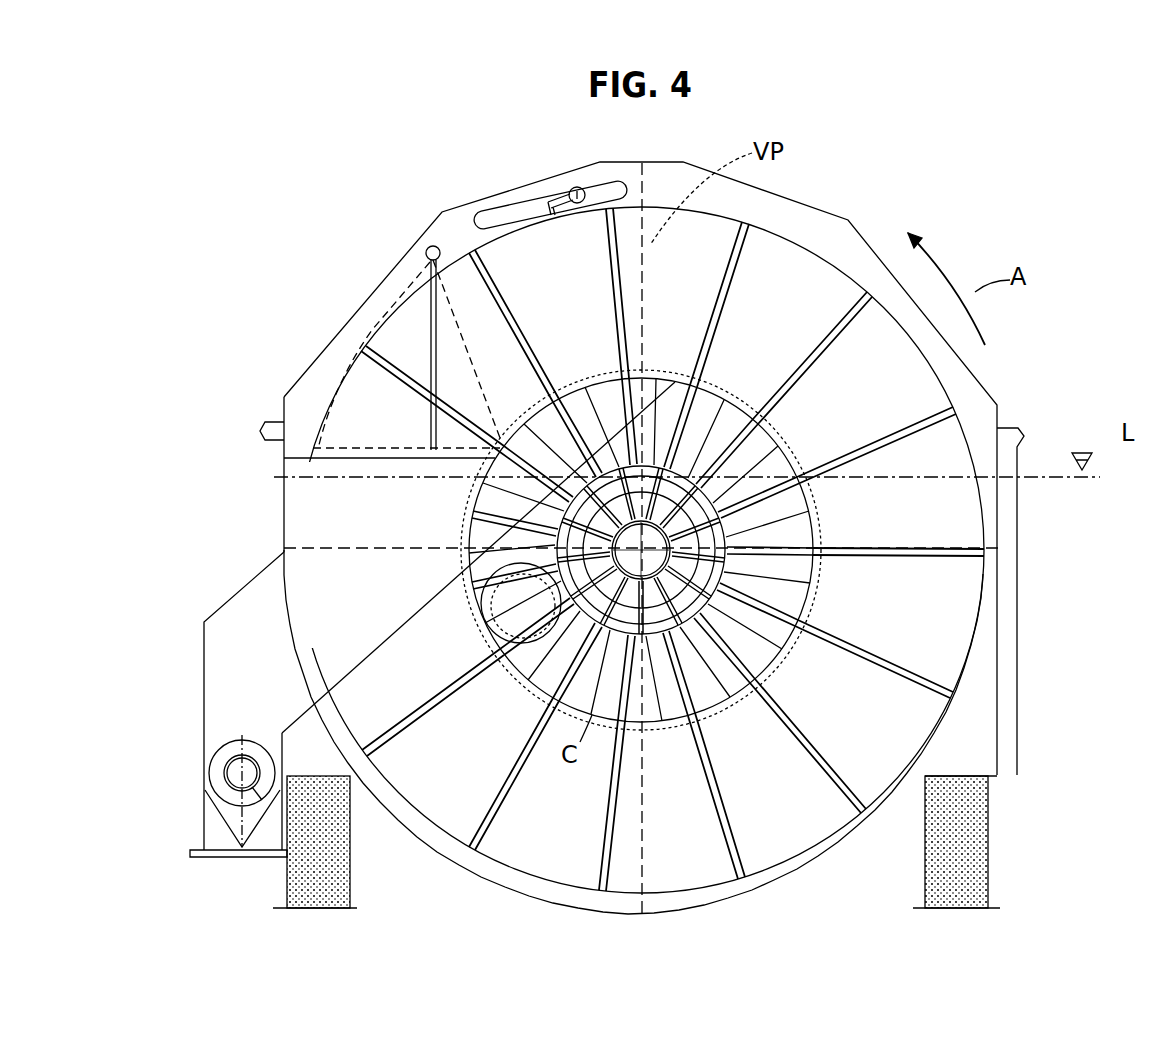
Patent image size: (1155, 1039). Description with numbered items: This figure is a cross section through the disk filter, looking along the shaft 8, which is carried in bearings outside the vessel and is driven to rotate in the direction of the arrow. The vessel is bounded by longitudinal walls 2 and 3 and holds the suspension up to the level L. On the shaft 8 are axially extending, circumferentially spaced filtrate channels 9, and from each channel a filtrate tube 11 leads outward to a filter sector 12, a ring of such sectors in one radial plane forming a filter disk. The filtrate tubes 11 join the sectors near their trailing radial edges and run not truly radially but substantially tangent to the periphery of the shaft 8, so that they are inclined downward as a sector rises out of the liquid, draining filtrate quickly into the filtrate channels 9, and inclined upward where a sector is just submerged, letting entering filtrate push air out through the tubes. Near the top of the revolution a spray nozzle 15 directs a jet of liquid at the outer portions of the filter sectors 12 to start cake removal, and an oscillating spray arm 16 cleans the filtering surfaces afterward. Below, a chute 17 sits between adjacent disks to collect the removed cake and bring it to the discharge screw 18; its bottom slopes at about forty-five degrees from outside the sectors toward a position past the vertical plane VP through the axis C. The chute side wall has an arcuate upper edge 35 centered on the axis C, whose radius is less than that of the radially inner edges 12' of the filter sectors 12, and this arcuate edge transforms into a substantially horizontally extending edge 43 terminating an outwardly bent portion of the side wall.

The longitudinal wall 2 is at (1002, 508).
The longitudinal wall 3 is at (284, 481).
The shaft 8 is at (718, 612).
The filtrate channel 9 is at (675, 474).
The filtrate tube 11 is at (790, 530).
The filter sector 12 is at (673, 549).
The radially inner edge of the filter sector 12' is at (526, 326).
The spray nozzle 15 is at (547, 203).
The oscillating spray arm 16 is at (430, 405).
The chute 17 is at (362, 583).
The discharge screw 18 is at (215, 746).
The upper radially outer edge of the side wall 35 is at (582, 388).
The horizontally extending edge 43 is at (378, 458).